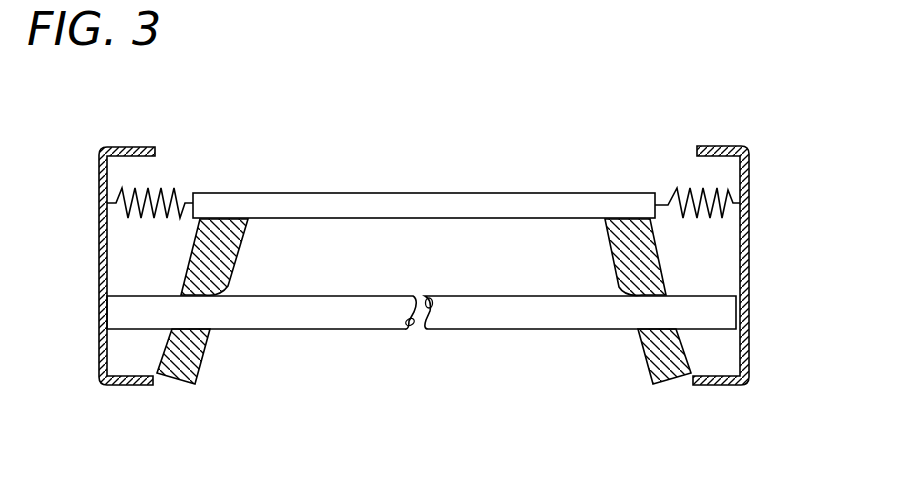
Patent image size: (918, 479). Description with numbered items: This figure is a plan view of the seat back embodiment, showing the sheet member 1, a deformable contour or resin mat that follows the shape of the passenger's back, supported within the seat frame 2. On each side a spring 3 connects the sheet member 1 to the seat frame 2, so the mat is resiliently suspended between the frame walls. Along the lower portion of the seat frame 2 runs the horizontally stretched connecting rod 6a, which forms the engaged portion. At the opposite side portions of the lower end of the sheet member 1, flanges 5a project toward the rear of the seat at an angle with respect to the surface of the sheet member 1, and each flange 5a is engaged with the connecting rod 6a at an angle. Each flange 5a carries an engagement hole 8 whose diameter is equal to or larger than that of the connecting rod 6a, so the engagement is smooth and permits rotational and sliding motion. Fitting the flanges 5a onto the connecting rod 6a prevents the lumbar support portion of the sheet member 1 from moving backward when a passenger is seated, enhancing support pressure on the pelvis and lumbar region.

The sheet member 1 is at (465, 193).
The seat frame 2 is at (751, 254).
The spring 3 is at (700, 190).
The flange 5a is at (167, 373).
The connecting rod 6a is at (485, 330).
The engagement hole 8 is at (210, 336).